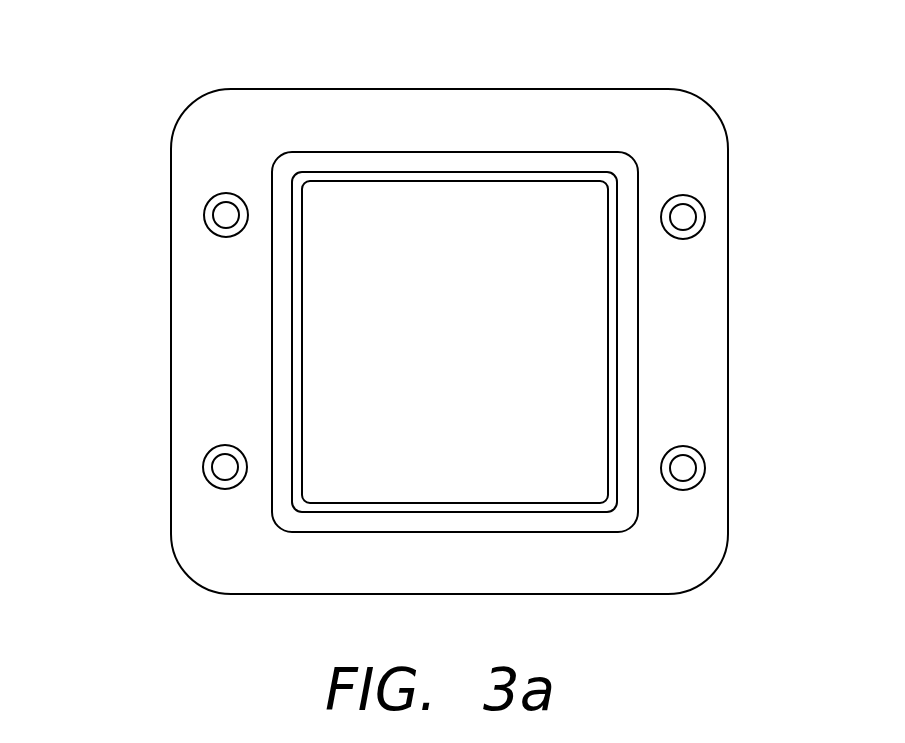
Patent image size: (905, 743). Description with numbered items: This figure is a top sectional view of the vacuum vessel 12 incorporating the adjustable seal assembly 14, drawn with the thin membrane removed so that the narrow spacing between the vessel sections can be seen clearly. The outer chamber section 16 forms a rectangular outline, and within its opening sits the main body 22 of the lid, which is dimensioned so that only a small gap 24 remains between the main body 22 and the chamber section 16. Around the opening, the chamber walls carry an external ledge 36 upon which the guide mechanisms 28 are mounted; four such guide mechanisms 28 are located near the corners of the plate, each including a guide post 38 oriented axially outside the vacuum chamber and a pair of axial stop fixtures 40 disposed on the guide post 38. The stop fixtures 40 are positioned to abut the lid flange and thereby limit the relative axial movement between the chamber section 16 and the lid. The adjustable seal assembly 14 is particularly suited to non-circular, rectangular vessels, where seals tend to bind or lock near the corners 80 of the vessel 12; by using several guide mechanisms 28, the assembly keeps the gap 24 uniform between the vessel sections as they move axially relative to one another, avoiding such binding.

The vacuum vessel 12 is at (445, 314).
The adjustable seal assembly 14 is at (436, 315).
The outer chamber section 16 is at (449, 344).
The main body 22 is at (455, 342).
The small gap 24 is at (350, 181).
The guide mechanisms 28 is at (455, 341).
The external ledge 36 is at (193, 343).
The guide post 38 is at (226, 217).
The axial stop fixtures 40 is at (456, 341).
The corners 80 is at (287, 177).